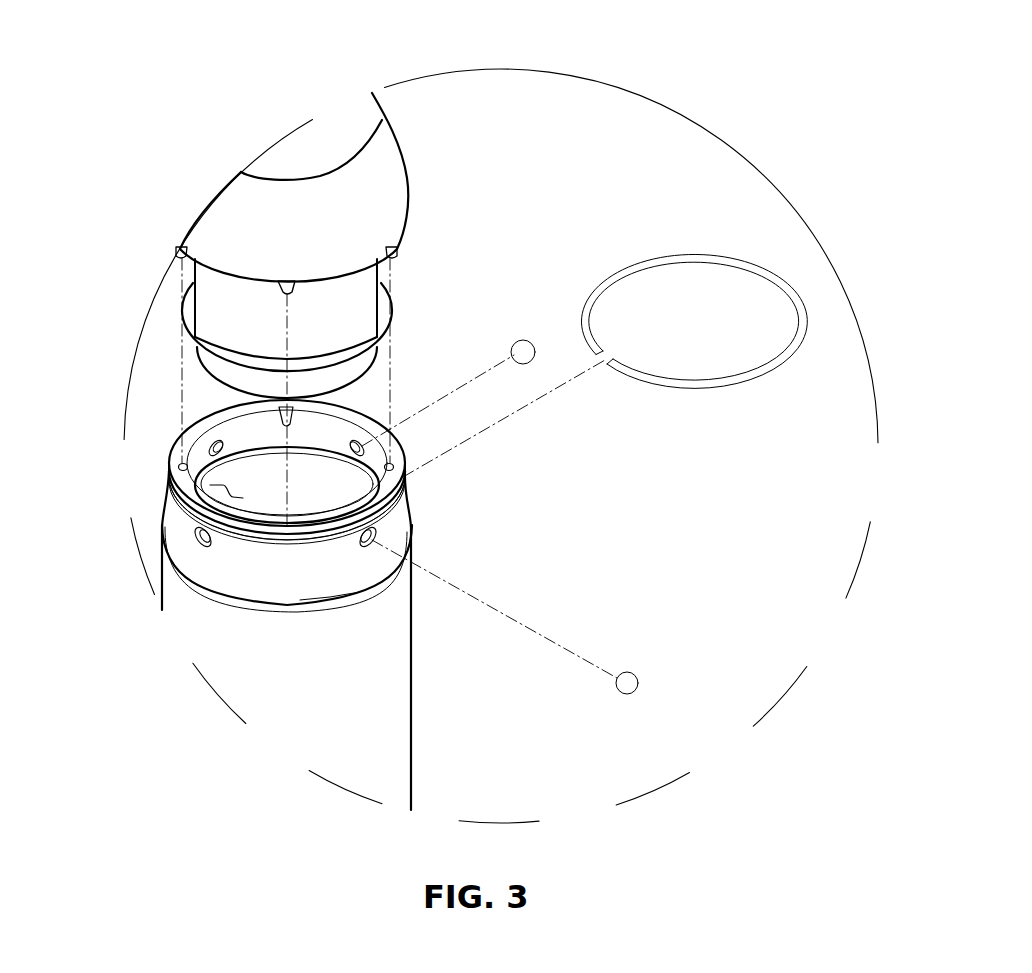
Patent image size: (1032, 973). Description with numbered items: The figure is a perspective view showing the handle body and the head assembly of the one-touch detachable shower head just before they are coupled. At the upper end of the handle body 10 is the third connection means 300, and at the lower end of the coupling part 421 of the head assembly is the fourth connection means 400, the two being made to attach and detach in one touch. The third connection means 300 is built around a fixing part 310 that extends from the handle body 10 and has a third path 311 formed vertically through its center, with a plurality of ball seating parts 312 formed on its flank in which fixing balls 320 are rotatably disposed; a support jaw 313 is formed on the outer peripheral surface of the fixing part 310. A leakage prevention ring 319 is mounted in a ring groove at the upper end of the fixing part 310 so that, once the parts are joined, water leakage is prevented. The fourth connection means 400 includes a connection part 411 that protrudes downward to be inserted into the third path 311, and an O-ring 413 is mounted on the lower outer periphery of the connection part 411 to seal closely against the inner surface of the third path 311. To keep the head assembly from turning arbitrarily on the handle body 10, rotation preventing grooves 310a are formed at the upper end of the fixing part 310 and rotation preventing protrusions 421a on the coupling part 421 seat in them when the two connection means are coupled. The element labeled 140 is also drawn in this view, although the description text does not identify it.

The handle body 10 is at (416, 782).
The gasket 140 is at (404, 492).
The third connection means 300 is at (187, 570).
The fixing part 310 is at (397, 523).
The rotation preventing groove 310a is at (176, 466).
The third path 311 is at (210, 485).
The ball seating part 312 is at (374, 538).
The support jaw 313 is at (360, 592).
The leakage prevention ring 319 is at (762, 273).
The fixing ball 320 is at (533, 340).
The fourth connection means 400 is at (418, 104).
The connection part 411 is at (223, 303).
The O-ring 413 is at (196, 333).
The coupling part 421 is at (243, 215).
The rotation preventing protrusion 421a is at (280, 282).